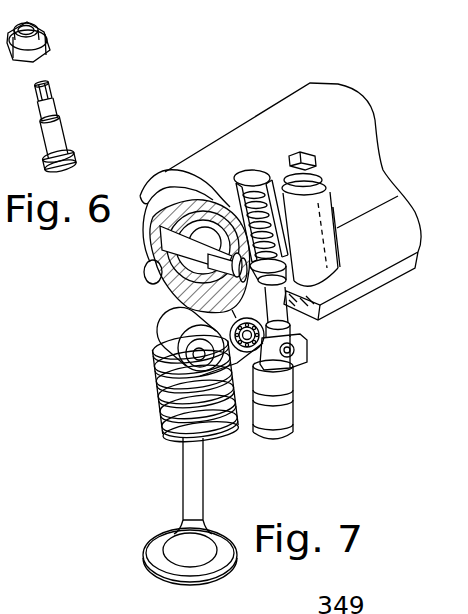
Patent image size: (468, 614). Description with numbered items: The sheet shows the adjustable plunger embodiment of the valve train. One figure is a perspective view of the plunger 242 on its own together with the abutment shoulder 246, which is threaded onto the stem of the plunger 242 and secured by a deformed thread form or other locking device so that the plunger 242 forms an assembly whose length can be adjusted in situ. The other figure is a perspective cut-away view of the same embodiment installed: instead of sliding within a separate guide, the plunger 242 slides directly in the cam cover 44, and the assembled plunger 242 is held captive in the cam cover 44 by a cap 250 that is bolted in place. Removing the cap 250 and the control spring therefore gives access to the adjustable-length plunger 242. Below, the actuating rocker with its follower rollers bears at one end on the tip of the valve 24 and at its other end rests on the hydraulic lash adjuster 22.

In FIG. 7, the hydraulic lash adjuster 22 is at (280, 400).
In FIG. 7, the valve 24 is at (163, 410).
In FIG. 7, the cam cover 44 is at (340, 147).
In FIG. 6, the plunger 242 is at (52, 137).
In FIG. 7, the plunger 242 is at (277, 313).
In FIG. 6, the abutment shoulder 246 is at (50, 46).
In FIG. 7, the cap 250 is at (253, 173).